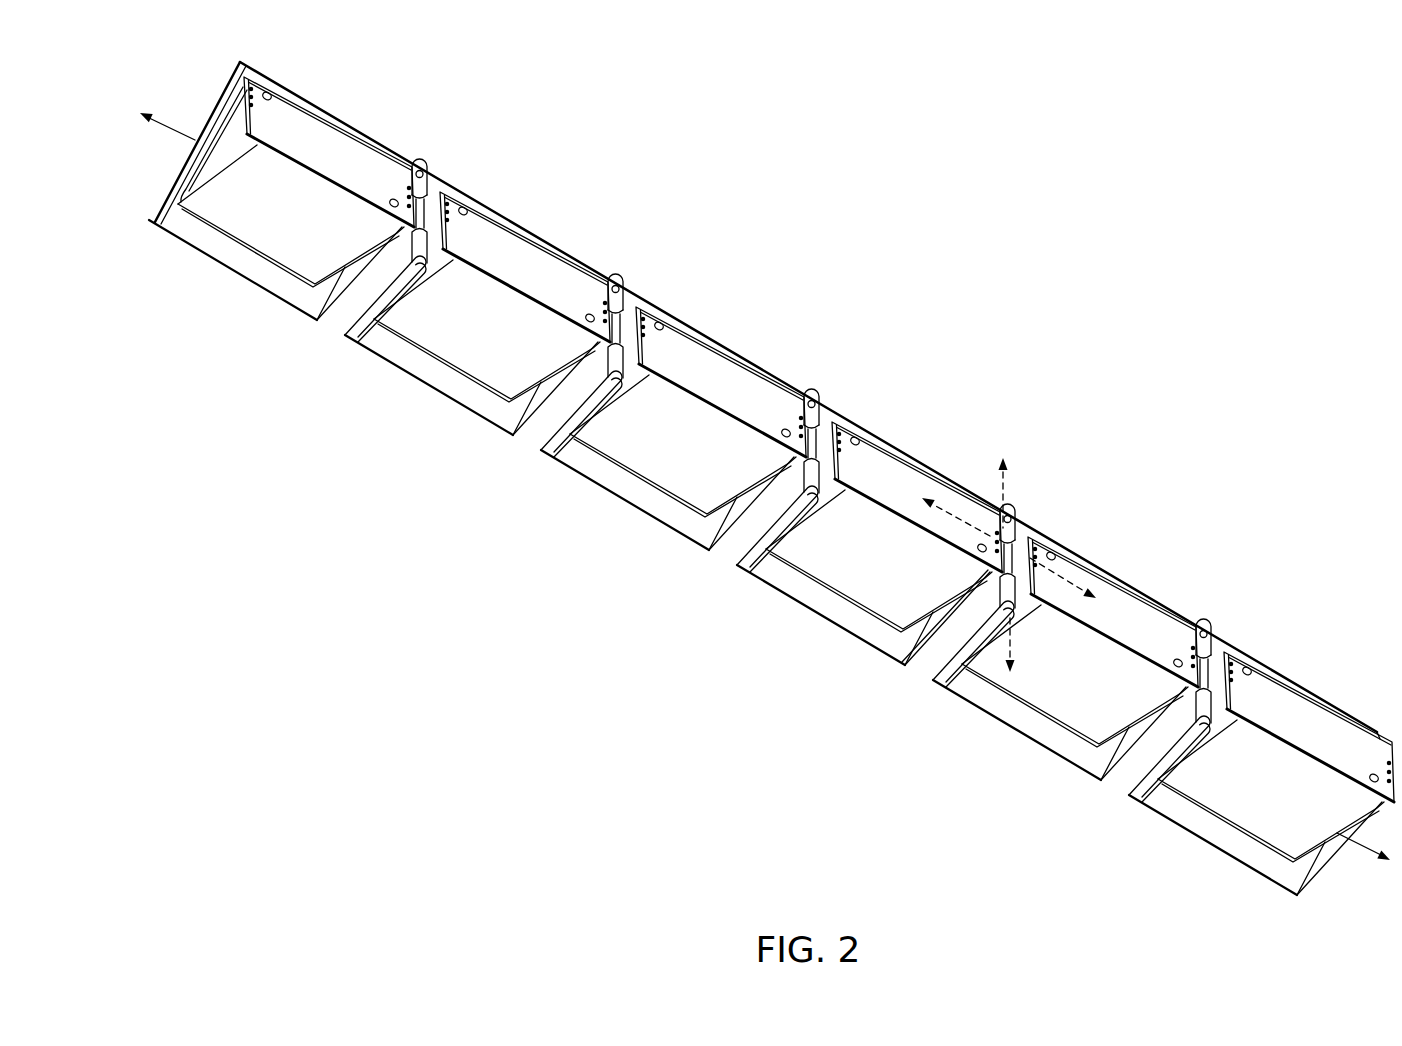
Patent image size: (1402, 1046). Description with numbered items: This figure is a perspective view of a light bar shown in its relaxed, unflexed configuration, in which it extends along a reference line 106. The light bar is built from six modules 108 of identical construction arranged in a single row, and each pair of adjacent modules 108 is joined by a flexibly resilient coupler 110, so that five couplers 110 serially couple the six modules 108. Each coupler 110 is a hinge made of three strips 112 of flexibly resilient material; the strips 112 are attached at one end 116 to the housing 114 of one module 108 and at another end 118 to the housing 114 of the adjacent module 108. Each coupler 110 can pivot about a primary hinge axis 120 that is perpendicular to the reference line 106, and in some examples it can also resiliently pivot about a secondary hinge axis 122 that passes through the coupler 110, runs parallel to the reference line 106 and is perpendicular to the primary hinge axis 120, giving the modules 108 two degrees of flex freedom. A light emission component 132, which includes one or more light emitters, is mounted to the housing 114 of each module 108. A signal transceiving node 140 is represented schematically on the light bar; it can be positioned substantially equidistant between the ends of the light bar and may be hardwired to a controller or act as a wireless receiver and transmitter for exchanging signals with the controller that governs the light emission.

The reference line 106 is at (170, 128).
The module 108 is at (766, 486).
The flexibly resilient coupler 110 is at (767, 484).
The strip 112 is at (811, 441).
The housing 114 is at (850, 615).
The one end 116 is at (908, 668).
The another end 118 is at (936, 680).
The primary hinge axis 120 is at (1005, 490).
The secondary hinge axis 122 is at (948, 512).
The light emission component 132 is at (318, 130).
The signal transceiving node 140 is at (810, 400).